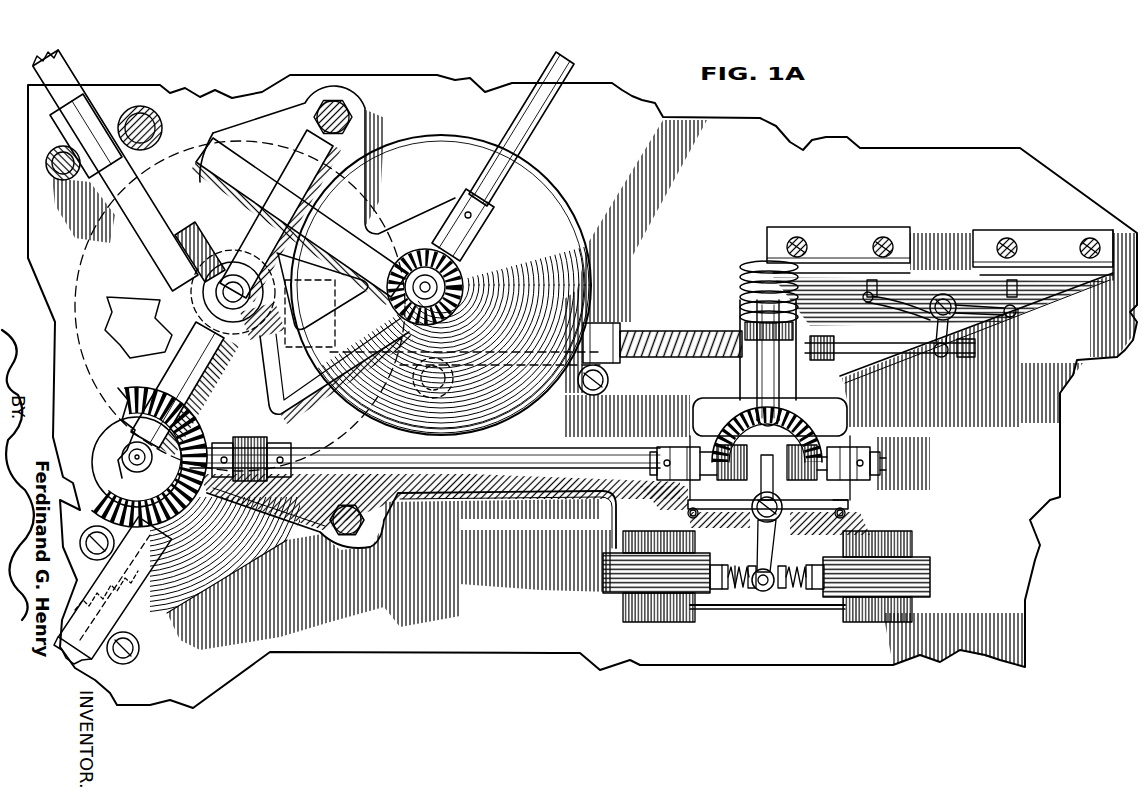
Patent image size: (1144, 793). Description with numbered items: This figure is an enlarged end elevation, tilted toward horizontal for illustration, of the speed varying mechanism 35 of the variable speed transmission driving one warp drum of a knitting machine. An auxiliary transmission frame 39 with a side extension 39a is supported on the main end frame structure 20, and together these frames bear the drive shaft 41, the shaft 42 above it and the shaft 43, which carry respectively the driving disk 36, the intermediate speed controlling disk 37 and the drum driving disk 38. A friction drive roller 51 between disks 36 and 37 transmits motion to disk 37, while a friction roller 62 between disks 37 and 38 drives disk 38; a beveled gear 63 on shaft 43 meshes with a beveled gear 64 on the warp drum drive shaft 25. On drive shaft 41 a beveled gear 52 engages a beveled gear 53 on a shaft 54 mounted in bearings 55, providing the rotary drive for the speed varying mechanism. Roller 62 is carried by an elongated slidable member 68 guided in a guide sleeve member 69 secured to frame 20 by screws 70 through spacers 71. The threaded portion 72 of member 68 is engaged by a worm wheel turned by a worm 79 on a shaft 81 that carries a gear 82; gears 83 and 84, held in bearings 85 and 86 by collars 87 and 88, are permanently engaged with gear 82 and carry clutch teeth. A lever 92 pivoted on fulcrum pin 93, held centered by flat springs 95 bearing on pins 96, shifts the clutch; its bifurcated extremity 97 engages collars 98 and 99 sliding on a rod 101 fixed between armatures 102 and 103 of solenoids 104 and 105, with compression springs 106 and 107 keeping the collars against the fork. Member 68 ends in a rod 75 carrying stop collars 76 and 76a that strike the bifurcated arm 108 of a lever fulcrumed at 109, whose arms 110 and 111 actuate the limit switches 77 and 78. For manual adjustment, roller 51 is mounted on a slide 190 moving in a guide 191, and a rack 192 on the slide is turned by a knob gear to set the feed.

The main end frame structure 20 is at (437, 76).
The warp drum drive shaft 25 is at (553, 114).
The speed varying mechanism 35 is at (875, 217).
The driving disk 36 is at (235, 572).
The intermediate speed controlling disk 37 is at (75, 316).
The drum driving disk 38 is at (548, 198).
The auxiliary transmission frame 39 is at (366, 166).
The side extension of frame 39a is at (575, 492).
The drive shaft 41 is at (133, 450).
The shaft 42 is at (245, 285).
The shaft 43 is at (420, 293).
The friction drive roller 51 is at (172, 305).
The beveled gear 52 is at (105, 488).
The beveled gear 53 is at (226, 436).
The shaft 54 is at (505, 465).
The bearing 55 is at (296, 447).
The friction roller 62 is at (198, 248).
The beveled gear 63 is at (470, 278).
The beveled gear 64 is at (432, 240).
The slidable member 68 is at (70, 68).
The guide sleeve member 69 is at (93, 107).
The screw 70 is at (612, 379).
The spacer 71 is at (617, 390).
The threaded portion 72 is at (663, 328).
The rod 75 is at (898, 358).
The limit stop collar 76 is at (822, 340).
The limit stop collar 76a is at (965, 360).
The limit switch 77 is at (1035, 240).
The limit switch 78 is at (812, 233).
The worm 79 is at (757, 266).
The shaft 81 is at (757, 377).
The gear 82 is at (740, 418).
The gear 83 is at (802, 488).
The gear 84 is at (740, 490).
The bearing 85 is at (850, 450).
The bearing 86 is at (687, 502).
The collar 87 is at (875, 478).
The collar 88 is at (660, 455).
The lever 92 is at (772, 562).
The fulcrum pin 93 is at (763, 532).
The flat spring 95 is at (850, 505).
The pin 96 is at (693, 517).
The bifurcated extremity 97 is at (777, 597).
The collar 98 is at (737, 592).
The collar 99 is at (797, 590).
The rod 101 is at (750, 575).
The armature 102 is at (717, 590).
The armature 103 is at (823, 593).
The solenoid 104 is at (623, 612).
The solenoid 105 is at (905, 625).
The spring 106 is at (727, 592).
The spring 107 is at (807, 593).
The bifurcated arm 108 is at (935, 333).
The fulcrum 109 is at (943, 293).
The lever arm 110 is at (1010, 316).
The lever arm 111 is at (893, 307).
The slide 190 is at (90, 673).
The guide 191 is at (125, 607).
The rack 192 is at (93, 590).